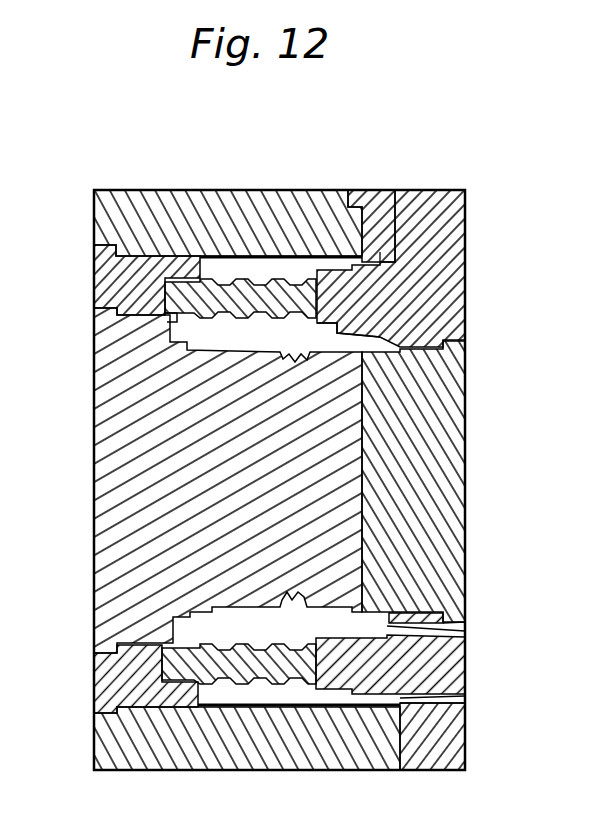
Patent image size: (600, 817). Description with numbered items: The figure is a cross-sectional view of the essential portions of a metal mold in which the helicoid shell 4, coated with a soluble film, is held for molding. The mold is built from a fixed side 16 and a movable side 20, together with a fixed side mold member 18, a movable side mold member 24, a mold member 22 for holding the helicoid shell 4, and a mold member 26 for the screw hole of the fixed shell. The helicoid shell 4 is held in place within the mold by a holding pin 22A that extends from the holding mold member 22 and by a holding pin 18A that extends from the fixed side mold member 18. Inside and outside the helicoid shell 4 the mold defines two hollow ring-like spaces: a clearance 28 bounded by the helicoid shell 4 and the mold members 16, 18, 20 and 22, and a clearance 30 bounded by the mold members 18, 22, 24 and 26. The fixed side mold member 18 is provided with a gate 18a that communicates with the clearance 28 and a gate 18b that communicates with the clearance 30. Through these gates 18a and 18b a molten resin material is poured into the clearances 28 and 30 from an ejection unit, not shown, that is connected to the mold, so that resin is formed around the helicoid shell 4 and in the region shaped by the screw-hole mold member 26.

The helicoid shell 4 is at (250, 280).
The fixed side 16 is at (443, 419).
The fixed side mold member 18 is at (443, 278).
The holding pin 18A is at (335, 339).
The gate 18a is at (465, 631).
The gate 18b is at (465, 699).
The movable side 20 is at (118, 443).
The mold member for holding the helicoid shell 22 is at (128, 293).
The holding pin 22A is at (181, 320).
The movable side mold member 24 is at (153, 222).
The mold member for the screw hole of the fixed shell 26 is at (378, 202).
The hollow ring-like clearance 28 is at (277, 342).
The hollow ring-like clearance 30 is at (290, 266).